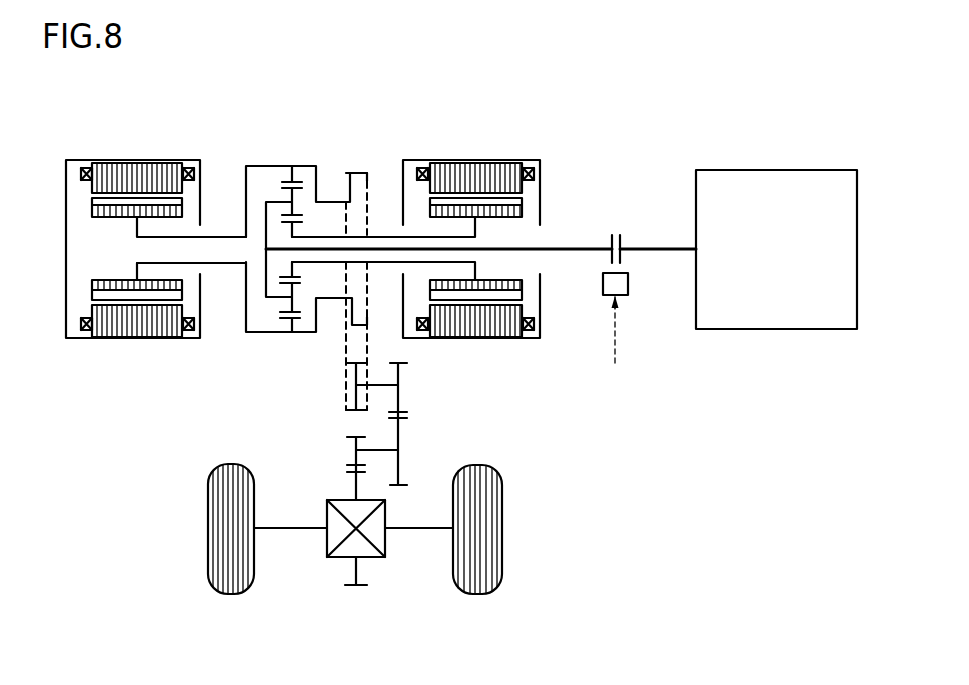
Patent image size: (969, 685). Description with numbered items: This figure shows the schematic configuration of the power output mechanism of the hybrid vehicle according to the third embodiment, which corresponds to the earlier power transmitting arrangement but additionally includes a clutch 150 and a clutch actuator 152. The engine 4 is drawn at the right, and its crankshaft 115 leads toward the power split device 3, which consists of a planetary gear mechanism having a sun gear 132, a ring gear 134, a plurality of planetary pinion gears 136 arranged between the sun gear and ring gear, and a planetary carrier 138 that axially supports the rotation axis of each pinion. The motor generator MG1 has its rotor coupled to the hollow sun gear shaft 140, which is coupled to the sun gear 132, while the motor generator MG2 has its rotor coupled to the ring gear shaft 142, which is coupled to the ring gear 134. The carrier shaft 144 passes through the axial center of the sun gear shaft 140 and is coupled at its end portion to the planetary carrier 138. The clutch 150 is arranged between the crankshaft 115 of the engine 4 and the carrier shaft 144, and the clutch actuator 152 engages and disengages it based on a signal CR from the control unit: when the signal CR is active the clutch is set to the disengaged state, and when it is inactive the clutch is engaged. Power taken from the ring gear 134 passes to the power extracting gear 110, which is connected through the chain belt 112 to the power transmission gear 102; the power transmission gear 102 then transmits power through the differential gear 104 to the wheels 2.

The wheels 2 is at (207, 528).
The power split device 3 is at (265, 335).
The engine 4 is at (780, 170).
The power transmission gear 102 is at (433, 427).
The differential gear 104 is at (343, 559).
The power extracting gear 110 is at (352, 172).
The chain belt 112 is at (366, 352).
The crankshaft 115 is at (660, 252).
The sun gear 132 is at (293, 263).
The ring gear 134 is at (292, 177).
The planetary pinion gears 136 is at (299, 197).
The planetary carrier 138 is at (266, 222).
The sun gear shaft 140 is at (333, 264).
The ring gear shaft 142 is at (227, 264).
The carrier shaft 144 is at (388, 250).
The clutch 150 is at (619, 228).
The clutch actuator 152 is at (603, 283).
The motor generator MG1 is at (495, 342).
The motor generator MG2 is at (113, 342).
The signal CR is at (616, 346).